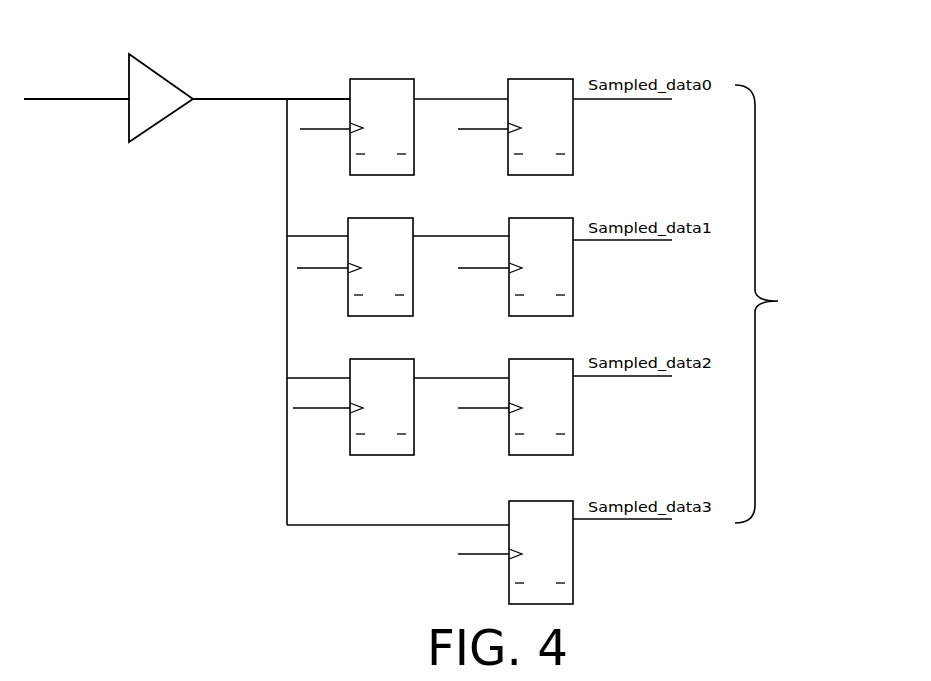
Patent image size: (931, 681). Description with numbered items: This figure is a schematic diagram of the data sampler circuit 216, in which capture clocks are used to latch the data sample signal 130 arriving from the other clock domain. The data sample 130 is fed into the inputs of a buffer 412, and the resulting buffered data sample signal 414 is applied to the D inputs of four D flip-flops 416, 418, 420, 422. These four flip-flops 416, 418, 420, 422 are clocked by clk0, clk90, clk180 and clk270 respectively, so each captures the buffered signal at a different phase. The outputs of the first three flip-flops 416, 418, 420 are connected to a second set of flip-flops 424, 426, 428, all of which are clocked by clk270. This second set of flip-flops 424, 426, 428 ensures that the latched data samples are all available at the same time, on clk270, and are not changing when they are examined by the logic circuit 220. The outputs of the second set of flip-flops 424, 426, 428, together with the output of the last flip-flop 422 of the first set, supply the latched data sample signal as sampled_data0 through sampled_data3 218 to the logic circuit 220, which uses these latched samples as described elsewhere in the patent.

The data sample signal 130 is at (72, 103).
The buffer 412 is at (174, 106).
The buffered data sample signal 414 is at (220, 98).
The D flip-flop 416 is at (402, 144).
The D flip-flop 418 is at (401, 284).
The D flip-flop 420 is at (402, 424).
The D flip-flop 422 is at (561, 570).
The second set flip-flop 424 is at (561, 144).
The second set flip-flop 426 is at (561, 284).
The second set flip-flop 428 is at (561, 424).
The data sampler circuit 216 is at (620, 58).
The latched data sample signal sampled_data0 through sampled_data3 218 is at (787, 304).
The logic circuit 220 is at (707, 673).